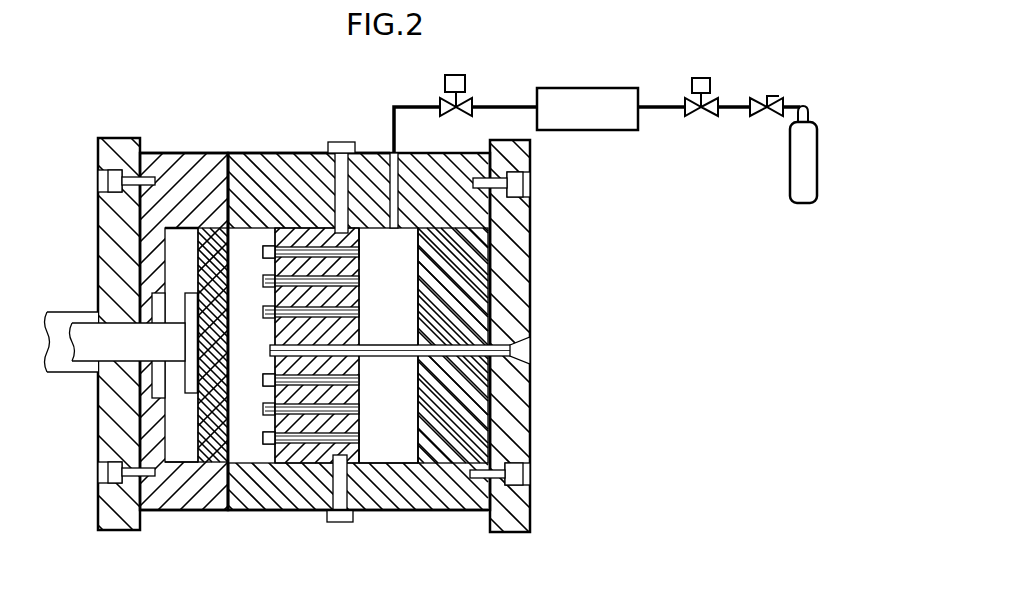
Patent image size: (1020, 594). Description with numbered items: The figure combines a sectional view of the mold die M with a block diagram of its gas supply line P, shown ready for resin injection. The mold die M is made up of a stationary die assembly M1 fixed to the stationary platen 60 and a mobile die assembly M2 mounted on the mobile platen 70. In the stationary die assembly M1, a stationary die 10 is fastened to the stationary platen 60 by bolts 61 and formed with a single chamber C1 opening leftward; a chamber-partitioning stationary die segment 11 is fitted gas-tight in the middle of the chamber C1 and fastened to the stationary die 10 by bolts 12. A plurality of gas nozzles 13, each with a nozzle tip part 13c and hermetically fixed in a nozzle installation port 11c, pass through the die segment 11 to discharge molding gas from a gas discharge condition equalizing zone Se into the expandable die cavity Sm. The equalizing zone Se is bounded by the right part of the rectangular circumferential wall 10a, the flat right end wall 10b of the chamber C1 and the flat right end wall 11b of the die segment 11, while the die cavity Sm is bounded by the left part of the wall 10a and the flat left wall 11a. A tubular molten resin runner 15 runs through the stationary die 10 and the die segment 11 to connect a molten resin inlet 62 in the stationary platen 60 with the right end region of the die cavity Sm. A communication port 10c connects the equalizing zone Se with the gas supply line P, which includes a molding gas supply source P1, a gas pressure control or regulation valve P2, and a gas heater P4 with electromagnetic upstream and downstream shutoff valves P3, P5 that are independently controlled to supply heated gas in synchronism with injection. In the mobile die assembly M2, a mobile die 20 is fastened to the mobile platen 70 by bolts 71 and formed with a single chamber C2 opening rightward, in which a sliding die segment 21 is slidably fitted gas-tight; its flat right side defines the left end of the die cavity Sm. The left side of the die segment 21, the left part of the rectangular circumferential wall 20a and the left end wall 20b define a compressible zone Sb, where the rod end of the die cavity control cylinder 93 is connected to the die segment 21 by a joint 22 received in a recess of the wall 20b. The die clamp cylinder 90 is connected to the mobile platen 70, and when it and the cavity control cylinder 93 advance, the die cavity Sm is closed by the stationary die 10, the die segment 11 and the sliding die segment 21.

The stationary die 10 is at (452, 152).
The rectangular circumferential wall 10a is at (268, 465).
The flat right end wall 10b is at (425, 292).
The communication port 10c is at (395, 153).
The chamber-partitioning stationary die segment 11 is at (361, 311).
The flat left wall 11a is at (266, 325).
The flat right end wall 11b is at (361, 323).
The nozzle installation port 11c is at (362, 254).
The bolts 12 is at (343, 142).
The gas nozzles 13 is at (362, 281).
The nozzle tip part 13c is at (264, 255).
The tubular molten resin runner 15 is at (372, 358).
The mobile die 20 is at (174, 147).
The rectangular circumferential wall 20a is at (186, 458).
The left end wall 20b is at (168, 252).
The sliding die segment 21 is at (264, 381).
The joint 22 is at (190, 394).
The stationary platen 60 is at (532, 324).
The bolts 61 is at (530, 184).
The molten resin inlet 62 is at (535, 352).
The mobile platen 70 is at (97, 292).
The bolts 71 is at (98, 183).
The die clamp cylinder 90 is at (50, 375).
The die cavity control cylinder 93 is at (84, 373).
The chamber C1 is at (398, 465).
The chamber C2 is at (185, 463).
The mold die M is at (223, 139).
The stationary die assembly M1 is at (308, 139).
The mobile die assembly M2 is at (200, 134).
The expandable die cavity Sm is at (243, 238).
The compressible zone Sb is at (170, 232).
The gas discharge condition equalizing zone Se is at (425, 255).
The gas supply line P is at (609, 131).
The molding gas supply source P1 is at (795, 195).
The gas pressure control or regulation valve P2 is at (767, 118).
The electromagnetic upstream shutoff valve P3 is at (701, 118).
The gas heater P4 is at (590, 88).
The electromagnetic downstream shutoff valve P5 is at (461, 81).